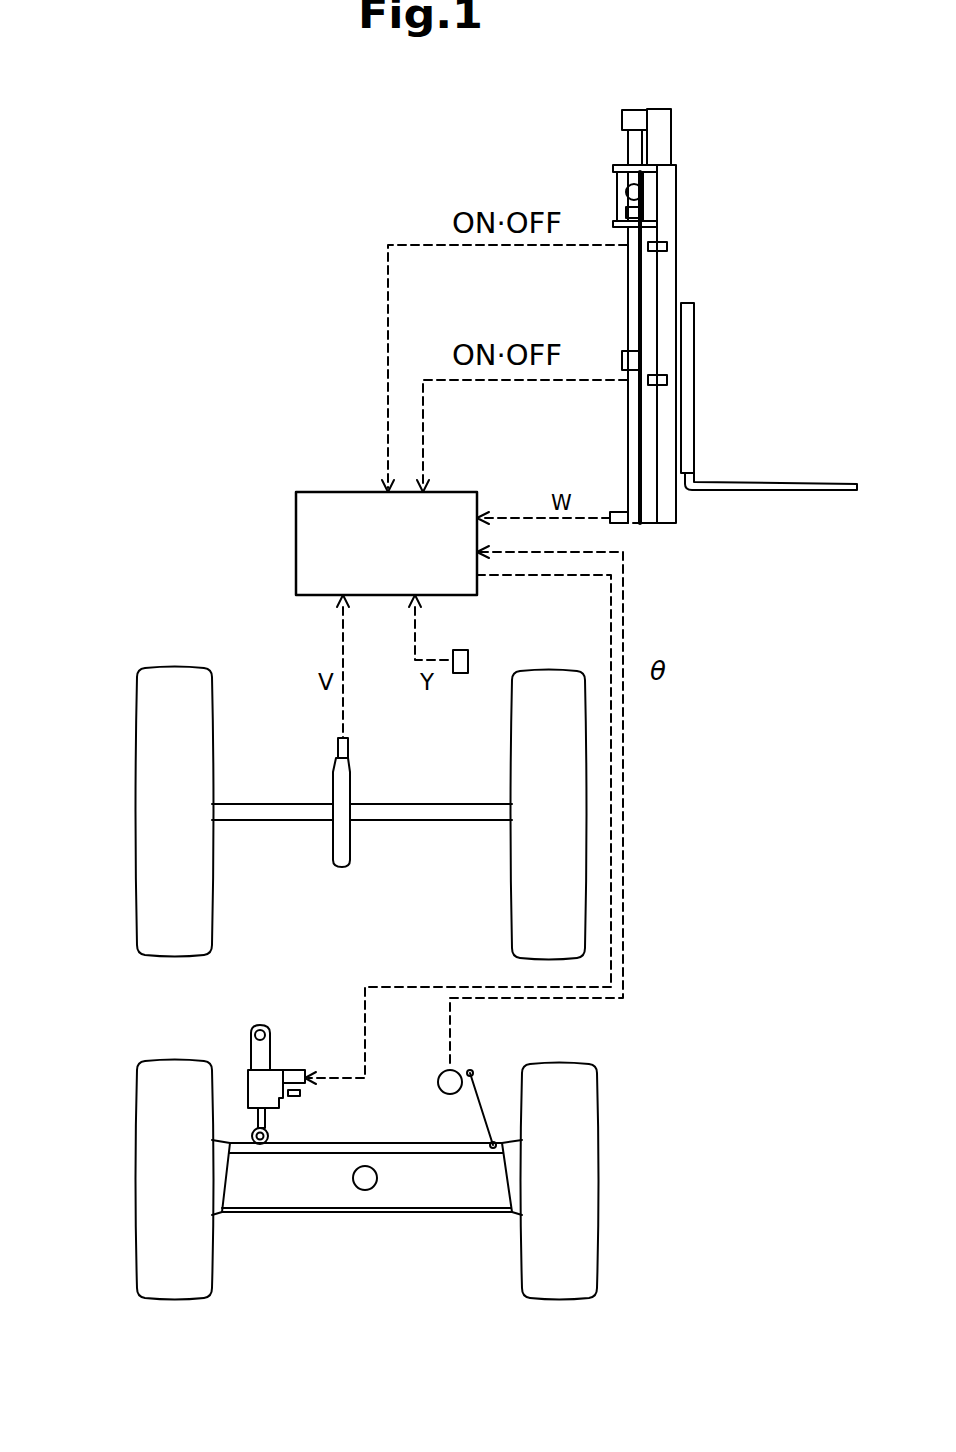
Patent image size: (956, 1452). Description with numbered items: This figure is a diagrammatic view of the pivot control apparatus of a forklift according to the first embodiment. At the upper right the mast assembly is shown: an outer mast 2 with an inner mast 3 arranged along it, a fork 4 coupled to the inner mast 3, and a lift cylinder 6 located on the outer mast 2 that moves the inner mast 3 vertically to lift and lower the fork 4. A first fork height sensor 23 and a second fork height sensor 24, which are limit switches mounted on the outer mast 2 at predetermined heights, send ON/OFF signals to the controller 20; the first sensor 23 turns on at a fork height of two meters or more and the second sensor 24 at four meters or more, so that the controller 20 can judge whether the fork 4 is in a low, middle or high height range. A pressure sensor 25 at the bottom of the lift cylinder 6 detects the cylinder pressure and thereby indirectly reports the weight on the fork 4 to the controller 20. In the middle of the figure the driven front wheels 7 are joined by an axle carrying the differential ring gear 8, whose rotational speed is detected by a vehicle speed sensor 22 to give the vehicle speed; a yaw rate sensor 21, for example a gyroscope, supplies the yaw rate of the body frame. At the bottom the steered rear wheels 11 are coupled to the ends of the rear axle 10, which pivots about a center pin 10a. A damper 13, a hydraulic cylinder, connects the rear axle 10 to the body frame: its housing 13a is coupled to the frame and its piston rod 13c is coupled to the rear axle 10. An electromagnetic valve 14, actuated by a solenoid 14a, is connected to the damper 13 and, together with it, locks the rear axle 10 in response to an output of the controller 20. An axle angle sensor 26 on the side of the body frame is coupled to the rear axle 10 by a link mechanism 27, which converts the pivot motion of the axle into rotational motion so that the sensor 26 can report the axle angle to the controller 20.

The outer mast 2 is at (677, 272).
The inner mast 3 is at (677, 136).
The fork 4 is at (783, 480).
The lift cylinder 6 is at (627, 322).
The front wheel 7 is at (172, 667).
The differential ring gear 8 is at (351, 781).
The rear axle 10 is at (426, 1218).
The center pin 10a is at (378, 1178).
The rear wheel 11 is at (137, 1178).
The damper 13 is at (246, 1084).
The housing 13a is at (250, 1094).
The piston rod 13c is at (268, 1117).
The electromagnetic valve 14 is at (297, 1070).
The solenoid 14a is at (305, 1093).
The controller 20 is at (296, 565).
The yaw rate sensor 21 is at (470, 658).
The vehicle speed sensor 22 is at (349, 748).
The first fork height sensor 23 is at (660, 374).
The second fork height sensor 24 is at (667, 243).
The pressure sensor 25 is at (616, 512).
The axle angle sensor 26 is at (440, 1073).
The link mechanism 27 is at (478, 1087).